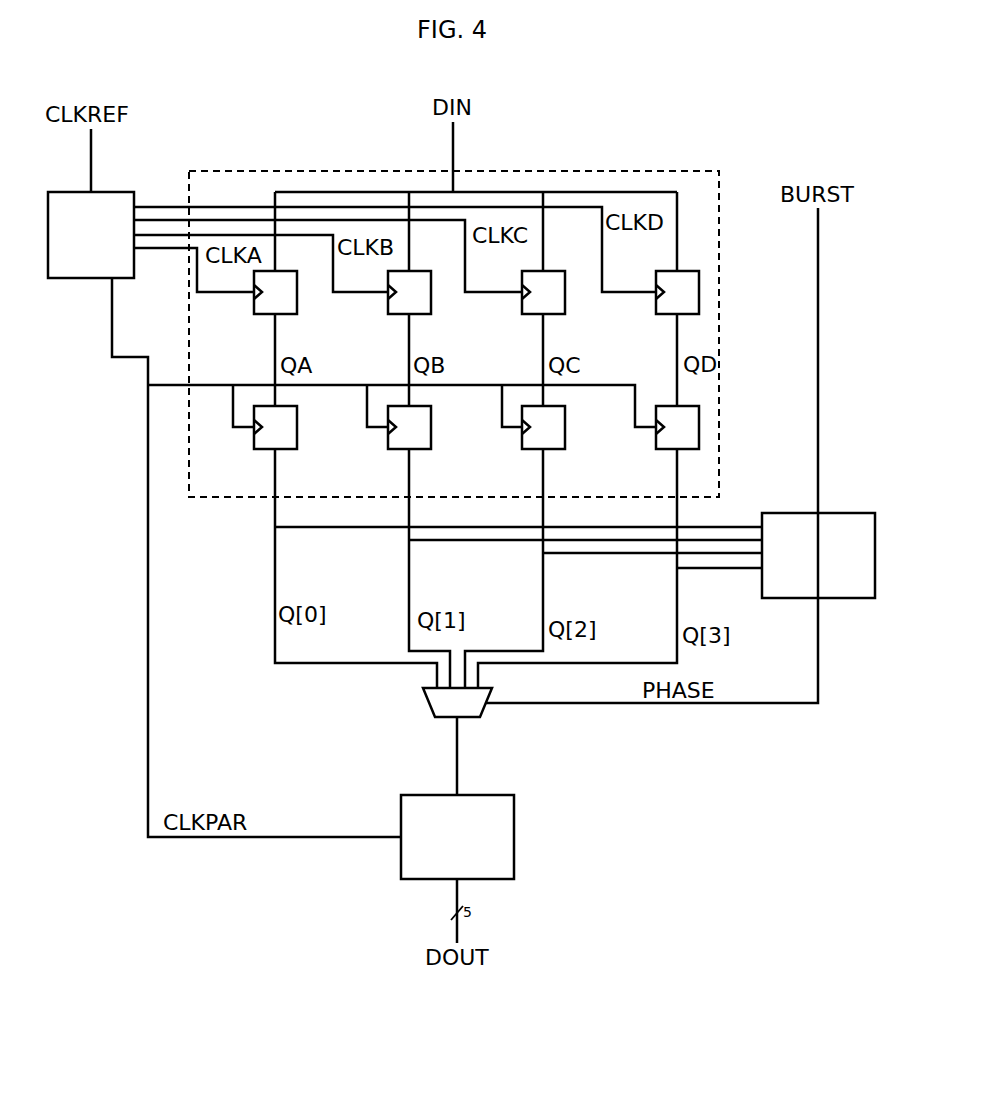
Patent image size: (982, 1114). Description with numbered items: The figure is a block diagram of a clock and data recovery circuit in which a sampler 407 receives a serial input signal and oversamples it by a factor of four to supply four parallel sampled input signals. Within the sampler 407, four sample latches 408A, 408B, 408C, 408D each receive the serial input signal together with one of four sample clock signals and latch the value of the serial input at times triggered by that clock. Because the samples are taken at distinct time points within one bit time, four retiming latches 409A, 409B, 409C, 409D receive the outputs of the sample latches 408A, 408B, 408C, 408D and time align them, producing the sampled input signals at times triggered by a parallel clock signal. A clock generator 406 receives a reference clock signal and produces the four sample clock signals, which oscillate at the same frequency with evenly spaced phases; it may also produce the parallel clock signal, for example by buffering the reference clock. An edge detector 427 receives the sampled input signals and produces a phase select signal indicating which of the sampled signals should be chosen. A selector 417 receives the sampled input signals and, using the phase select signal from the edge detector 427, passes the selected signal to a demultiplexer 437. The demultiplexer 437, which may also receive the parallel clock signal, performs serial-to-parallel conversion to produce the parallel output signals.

The clock generator 406 is at (100, 278).
The sampler 407 is at (719, 330).
The sample latch 408A is at (268, 314).
The sample latch 408B is at (402, 314).
The sample latch 408C is at (536, 314).
The sample latch 408D is at (670, 314).
The retiming latch 409A is at (268, 449).
The retiming latch 409B is at (402, 449).
The retiming latch 409C is at (536, 449).
The retiming latch 409D is at (670, 449).
The selector 417 is at (429, 703).
The edge detector 427 is at (800, 513).
The demultiplexer 437 is at (401, 872).